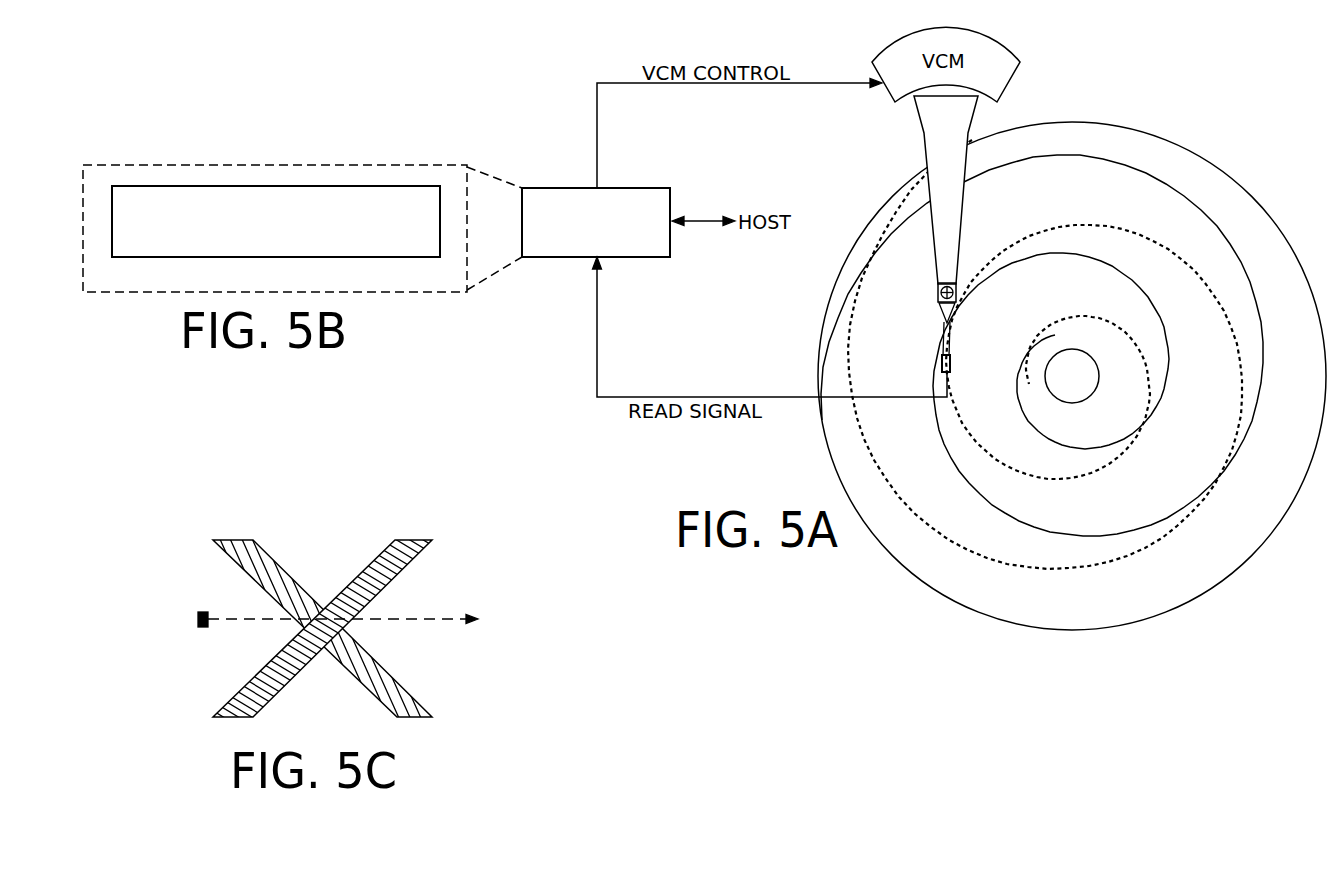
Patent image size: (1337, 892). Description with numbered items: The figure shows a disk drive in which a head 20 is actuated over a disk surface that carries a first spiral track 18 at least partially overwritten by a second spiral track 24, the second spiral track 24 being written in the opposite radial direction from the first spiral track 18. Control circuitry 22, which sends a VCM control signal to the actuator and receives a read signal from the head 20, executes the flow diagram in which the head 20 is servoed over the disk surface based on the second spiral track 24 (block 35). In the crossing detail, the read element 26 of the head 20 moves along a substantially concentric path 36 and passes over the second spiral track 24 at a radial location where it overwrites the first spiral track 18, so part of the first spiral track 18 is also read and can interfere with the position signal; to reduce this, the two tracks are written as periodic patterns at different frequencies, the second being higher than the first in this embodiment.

In FIG. 5A, the first spiral track 18 is at (1266, 188).
In FIG. 5C, the first spiral track 18 is at (418, 703).
In FIG. 5A, the head 20 is at (930, 356).
In FIG. 5A, the control circuitry 22 is at (635, 188).
In FIG. 5A, the second spiral track 24 is at (837, 320).
In FIG. 5C, the second spiral track 24 is at (370, 560).
In FIG. 5C, the read element 26 is at (190, 601).
In FIG. 5B, the block 35 is at (393, 257).
In FIG. 5C, the substantially concentric path 36 is at (415, 618).